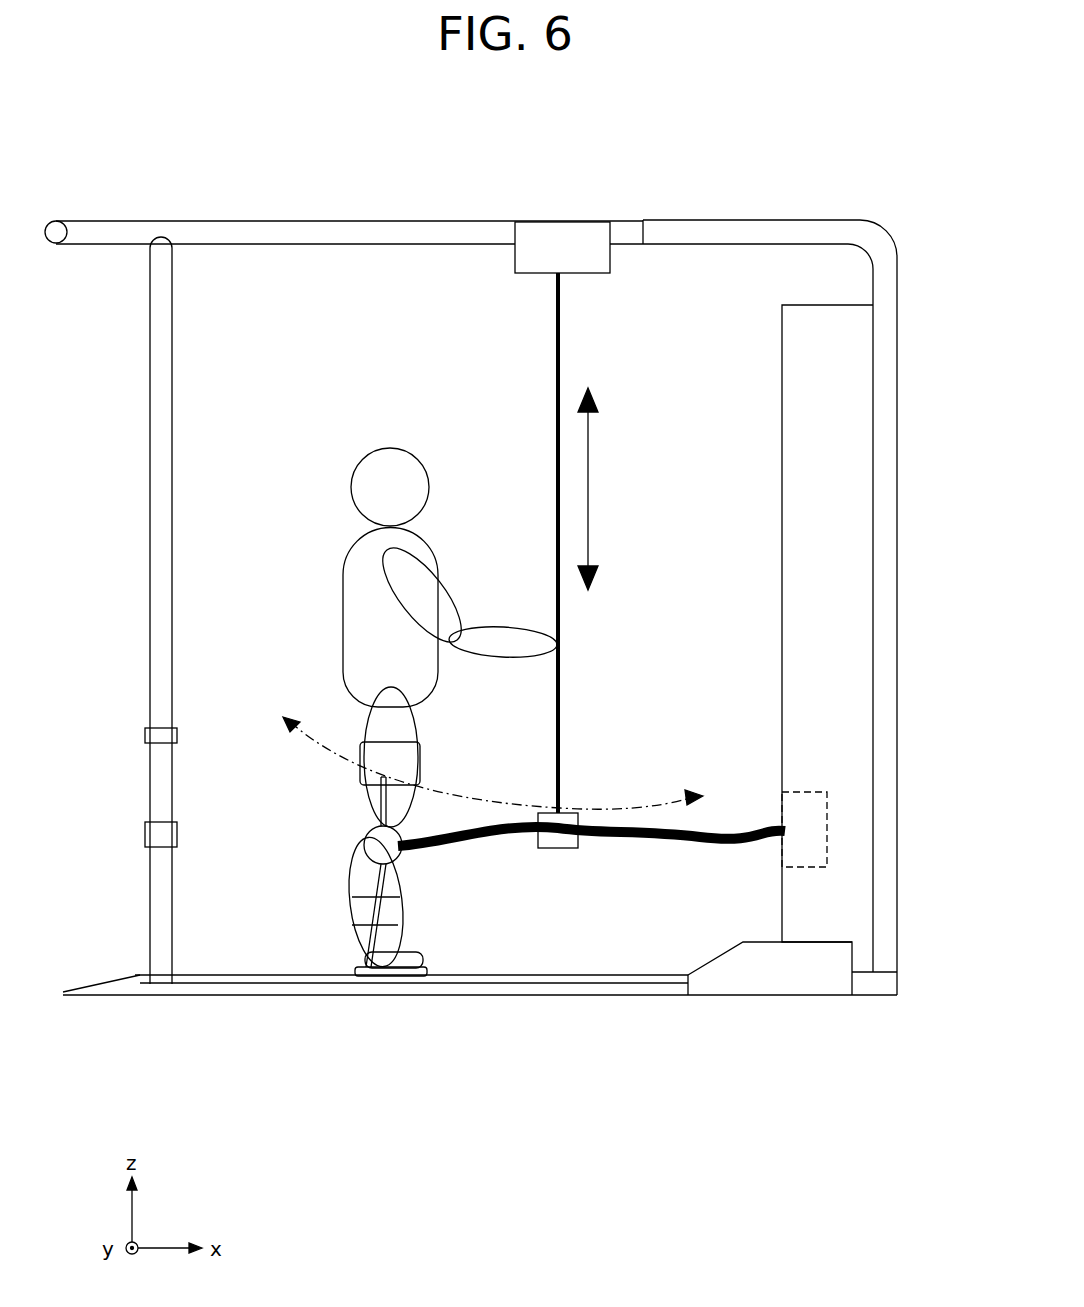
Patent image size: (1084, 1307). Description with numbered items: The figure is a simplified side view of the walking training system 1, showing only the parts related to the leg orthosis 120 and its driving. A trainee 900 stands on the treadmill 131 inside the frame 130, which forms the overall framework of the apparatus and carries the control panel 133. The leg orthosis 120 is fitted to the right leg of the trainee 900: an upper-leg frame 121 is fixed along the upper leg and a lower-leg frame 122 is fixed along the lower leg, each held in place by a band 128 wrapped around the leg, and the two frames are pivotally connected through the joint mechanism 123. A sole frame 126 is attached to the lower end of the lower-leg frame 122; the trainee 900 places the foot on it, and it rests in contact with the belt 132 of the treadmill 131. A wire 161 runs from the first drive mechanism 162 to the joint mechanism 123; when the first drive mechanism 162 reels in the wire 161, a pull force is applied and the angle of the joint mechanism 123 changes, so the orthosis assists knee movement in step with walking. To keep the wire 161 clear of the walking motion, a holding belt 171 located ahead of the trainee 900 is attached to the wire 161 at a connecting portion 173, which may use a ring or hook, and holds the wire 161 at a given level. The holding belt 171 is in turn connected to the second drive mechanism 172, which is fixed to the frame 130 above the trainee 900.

The walking training system 1 is at (80, 115).
The leg orthosis 120 is at (430, 892).
The upper-leg frame 121 is at (378, 780).
The lower-leg frame 122 is at (382, 879).
The joint mechanism 123 is at (403, 858).
The sole frame 126 is at (383, 975).
The band 128 is at (421, 750).
The frame 130 is at (171, 313).
The treadmill 131 is at (648, 990).
The belt 132 is at (193, 995).
The control panel 133 is at (858, 486).
The wire 161 is at (712, 840).
The first drive mechanism 162 is at (827, 826).
The holding belt 171 is at (562, 343).
The second drive mechanism 172 is at (540, 221).
The connecting portion 173 is at (547, 850).
The trainee 900 is at (417, 454).